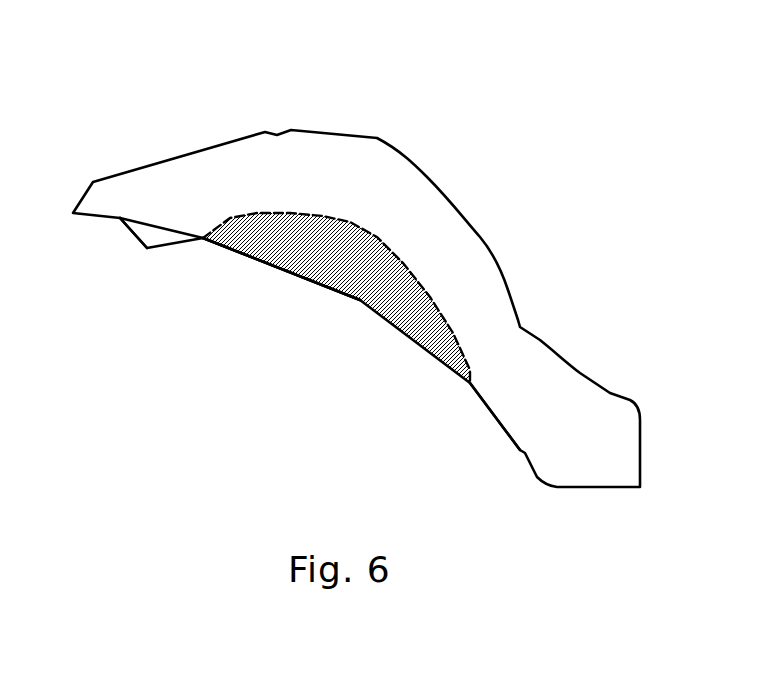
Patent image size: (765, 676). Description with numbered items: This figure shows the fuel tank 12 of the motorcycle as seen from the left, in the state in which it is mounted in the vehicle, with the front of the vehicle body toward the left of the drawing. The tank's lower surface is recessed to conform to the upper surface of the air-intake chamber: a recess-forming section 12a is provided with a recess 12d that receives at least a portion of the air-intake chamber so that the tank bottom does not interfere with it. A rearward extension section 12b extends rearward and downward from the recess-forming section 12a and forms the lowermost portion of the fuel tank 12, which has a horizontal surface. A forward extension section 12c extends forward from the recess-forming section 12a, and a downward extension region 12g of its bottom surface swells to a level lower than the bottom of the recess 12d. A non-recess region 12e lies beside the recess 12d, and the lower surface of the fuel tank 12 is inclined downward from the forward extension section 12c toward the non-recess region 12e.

The fuel tank 12 is at (455, 168).
The recess-forming section 12a is at (307, 293).
The rearward extension section 12b is at (502, 445).
The forward extension section 12c is at (120, 250).
The recess 12d is at (383, 293).
The non-recess region 12e is at (232, 258).
The downward extension region 12g is at (160, 235).